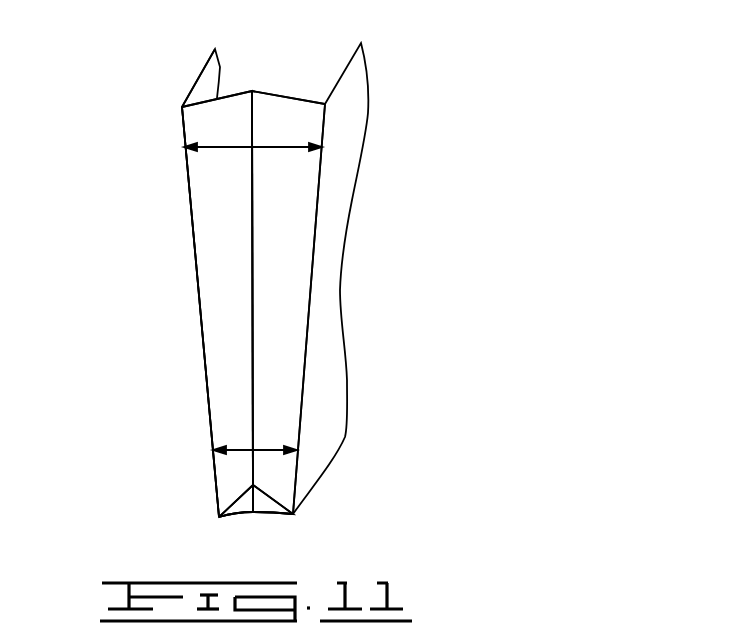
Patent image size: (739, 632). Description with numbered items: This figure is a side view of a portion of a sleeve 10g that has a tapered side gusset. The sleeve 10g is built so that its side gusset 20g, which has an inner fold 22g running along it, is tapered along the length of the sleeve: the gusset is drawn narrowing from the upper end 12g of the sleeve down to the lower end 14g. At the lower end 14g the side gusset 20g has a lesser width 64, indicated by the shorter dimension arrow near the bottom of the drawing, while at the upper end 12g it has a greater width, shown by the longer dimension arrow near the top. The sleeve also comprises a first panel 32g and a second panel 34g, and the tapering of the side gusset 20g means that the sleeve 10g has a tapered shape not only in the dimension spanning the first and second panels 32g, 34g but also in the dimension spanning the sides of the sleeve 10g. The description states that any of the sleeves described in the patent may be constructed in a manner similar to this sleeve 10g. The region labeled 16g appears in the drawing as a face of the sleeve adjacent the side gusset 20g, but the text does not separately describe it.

The sleeve 10g is at (175, 328).
The upper end 12g is at (240, 92).
The lower end 14g is at (273, 517).
The front panel 16g is at (225, 355).
The side gusset 20g is at (192, 228).
The inner fold 22g is at (254, 315).
The first panel 32g is at (330, 265).
The second panel 34g is at (193, 73).
The lesser width 64 is at (267, 450).